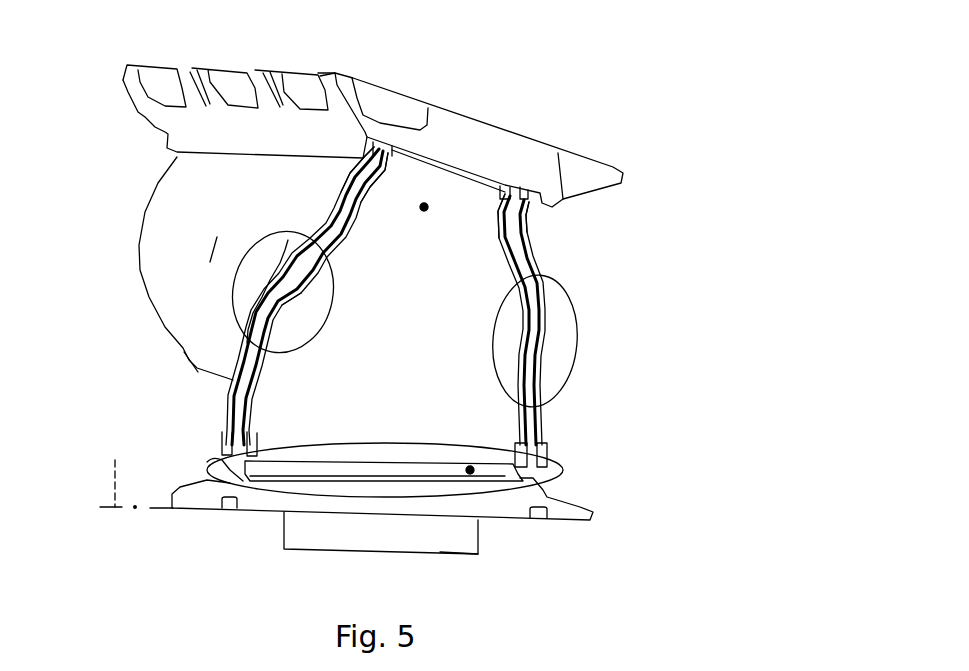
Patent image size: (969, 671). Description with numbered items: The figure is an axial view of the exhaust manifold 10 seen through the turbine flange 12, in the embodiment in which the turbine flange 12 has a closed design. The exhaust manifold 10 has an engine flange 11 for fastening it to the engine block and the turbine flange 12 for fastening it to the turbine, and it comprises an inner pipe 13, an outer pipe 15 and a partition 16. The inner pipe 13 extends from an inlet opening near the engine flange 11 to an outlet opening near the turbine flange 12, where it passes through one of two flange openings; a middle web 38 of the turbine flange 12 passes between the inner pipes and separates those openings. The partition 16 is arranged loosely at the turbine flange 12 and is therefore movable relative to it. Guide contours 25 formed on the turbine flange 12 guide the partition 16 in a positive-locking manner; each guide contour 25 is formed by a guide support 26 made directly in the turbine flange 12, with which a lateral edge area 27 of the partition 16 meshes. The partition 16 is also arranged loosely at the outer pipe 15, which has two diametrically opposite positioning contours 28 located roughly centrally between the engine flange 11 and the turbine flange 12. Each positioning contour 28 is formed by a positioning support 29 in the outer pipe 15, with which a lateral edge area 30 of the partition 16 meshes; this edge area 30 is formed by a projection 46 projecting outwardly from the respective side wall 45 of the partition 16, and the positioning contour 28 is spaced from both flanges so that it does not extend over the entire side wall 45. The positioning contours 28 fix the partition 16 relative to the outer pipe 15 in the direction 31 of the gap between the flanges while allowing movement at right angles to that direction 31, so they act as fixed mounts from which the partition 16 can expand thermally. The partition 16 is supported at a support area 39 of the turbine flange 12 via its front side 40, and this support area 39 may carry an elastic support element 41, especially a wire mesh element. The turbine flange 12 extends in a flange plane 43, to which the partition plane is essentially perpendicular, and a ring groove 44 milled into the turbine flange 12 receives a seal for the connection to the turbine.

The exhaust manifold 10 is at (699, 97).
The engine flange 11 is at (452, 110).
The turbine flange 12 is at (582, 500).
The inner pipe 13 is at (444, 554).
The outer pipe 15 is at (149, 298).
The partition 16 is at (424, 207).
The guide contour 25 is at (547, 447).
The guide support 26 is at (512, 449).
The lateral edge area 27 is at (223, 443).
The positioning contour 28 is at (286, 297).
The positioning support 29 is at (280, 318).
The lateral edge area 30 is at (285, 297).
The direction of the gap 31 is at (383, 390).
The middle web 38 is at (390, 520).
The support area 39 is at (470, 470).
The front side 40 is at (335, 460).
The elastic support element 41 is at (393, 470).
The flange plane 43 is at (129, 476).
The ring groove 44 is at (226, 511).
The side wall 45 is at (342, 213).
The projection 46 is at (264, 323).